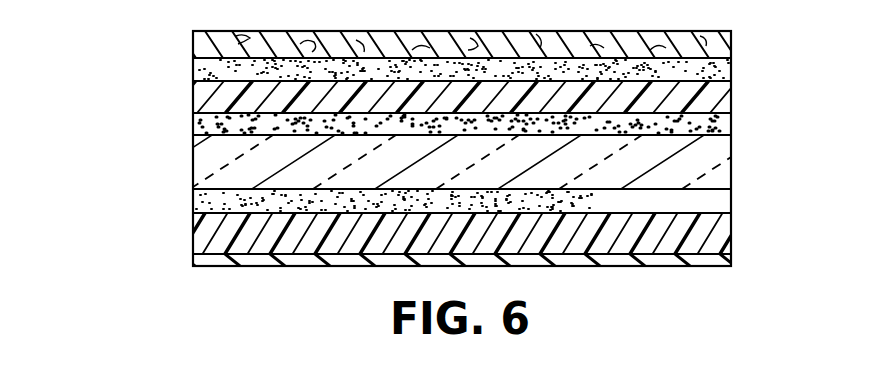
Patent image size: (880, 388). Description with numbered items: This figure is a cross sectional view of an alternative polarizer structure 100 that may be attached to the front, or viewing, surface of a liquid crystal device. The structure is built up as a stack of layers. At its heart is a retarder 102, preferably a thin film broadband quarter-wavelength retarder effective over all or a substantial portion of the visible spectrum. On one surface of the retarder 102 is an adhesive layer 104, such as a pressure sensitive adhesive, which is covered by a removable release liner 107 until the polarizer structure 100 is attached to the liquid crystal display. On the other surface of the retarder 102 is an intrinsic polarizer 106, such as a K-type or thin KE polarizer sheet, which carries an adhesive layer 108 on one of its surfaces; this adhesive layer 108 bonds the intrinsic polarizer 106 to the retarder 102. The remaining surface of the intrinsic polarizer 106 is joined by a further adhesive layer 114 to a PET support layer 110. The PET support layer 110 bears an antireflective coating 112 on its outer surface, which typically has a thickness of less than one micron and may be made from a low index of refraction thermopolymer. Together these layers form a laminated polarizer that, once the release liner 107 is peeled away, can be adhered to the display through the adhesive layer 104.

The polarizer structure 100 is at (126, 166).
The removable release liner 107 is at (715, 43).
The adhesive layer 104 is at (713, 72).
The retarder 102 is at (722, 104).
The adhesive layer 108 is at (712, 130).
The intrinsic polarizer 106 is at (718, 173).
The adhesive layer 114 is at (715, 200).
The PET support layer 110 is at (718, 227).
The antireflective coating 112 is at (718, 257).